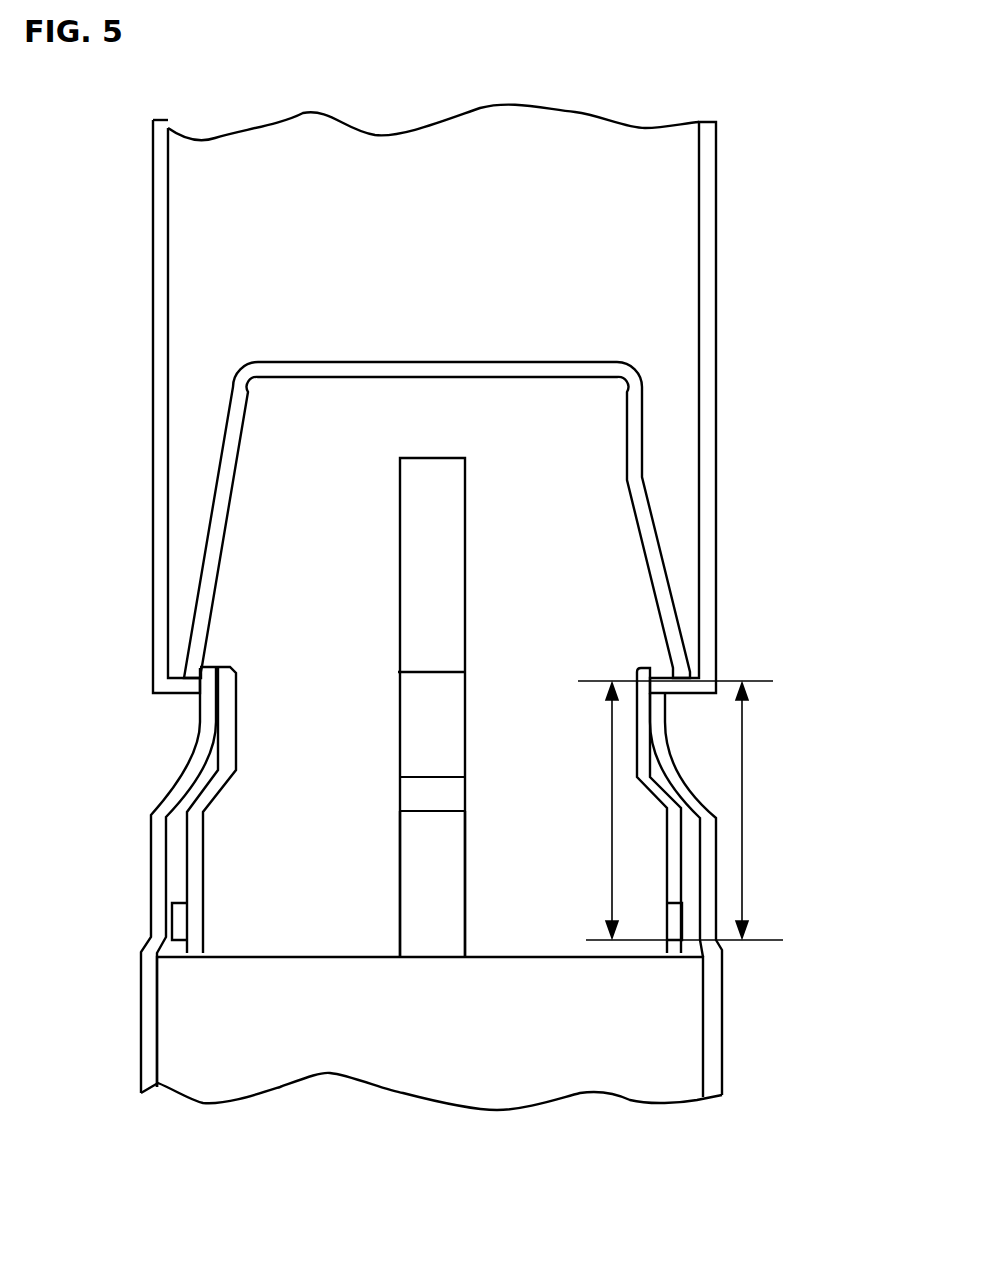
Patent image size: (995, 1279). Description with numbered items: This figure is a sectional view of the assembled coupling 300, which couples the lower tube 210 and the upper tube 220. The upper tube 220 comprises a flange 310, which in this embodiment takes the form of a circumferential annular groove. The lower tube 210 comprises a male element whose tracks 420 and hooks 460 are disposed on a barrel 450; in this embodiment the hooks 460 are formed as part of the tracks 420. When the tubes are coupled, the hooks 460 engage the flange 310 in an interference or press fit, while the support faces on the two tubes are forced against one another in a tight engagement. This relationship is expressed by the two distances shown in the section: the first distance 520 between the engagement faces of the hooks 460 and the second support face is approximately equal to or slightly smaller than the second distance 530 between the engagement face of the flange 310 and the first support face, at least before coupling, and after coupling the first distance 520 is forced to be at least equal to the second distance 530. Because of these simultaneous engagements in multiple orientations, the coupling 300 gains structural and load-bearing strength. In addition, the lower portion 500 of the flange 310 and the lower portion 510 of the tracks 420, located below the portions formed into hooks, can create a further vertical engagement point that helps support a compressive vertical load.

The coupling 300 is at (77, 251).
The upper tube 220 is at (718, 497).
The barrel 450 is at (238, 398).
The hooks 460 is at (422, 672).
The lower portion of tracks 510 is at (418, 790).
The tracks 420 is at (406, 887).
The flange 310 is at (197, 745).
The lower portion of flange 500 is at (218, 757).
The first distance 520 is at (612, 800).
The second distance 530 is at (745, 808).
The lower tube 210 is at (722, 1012).